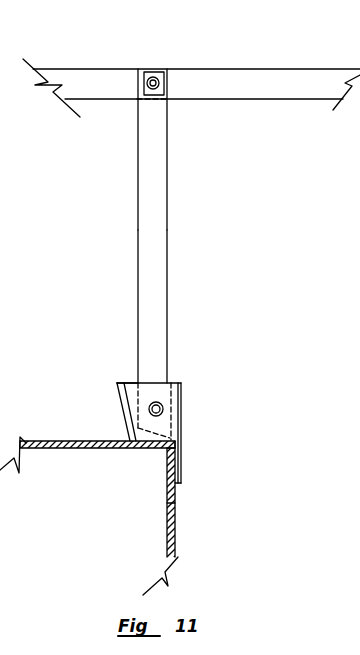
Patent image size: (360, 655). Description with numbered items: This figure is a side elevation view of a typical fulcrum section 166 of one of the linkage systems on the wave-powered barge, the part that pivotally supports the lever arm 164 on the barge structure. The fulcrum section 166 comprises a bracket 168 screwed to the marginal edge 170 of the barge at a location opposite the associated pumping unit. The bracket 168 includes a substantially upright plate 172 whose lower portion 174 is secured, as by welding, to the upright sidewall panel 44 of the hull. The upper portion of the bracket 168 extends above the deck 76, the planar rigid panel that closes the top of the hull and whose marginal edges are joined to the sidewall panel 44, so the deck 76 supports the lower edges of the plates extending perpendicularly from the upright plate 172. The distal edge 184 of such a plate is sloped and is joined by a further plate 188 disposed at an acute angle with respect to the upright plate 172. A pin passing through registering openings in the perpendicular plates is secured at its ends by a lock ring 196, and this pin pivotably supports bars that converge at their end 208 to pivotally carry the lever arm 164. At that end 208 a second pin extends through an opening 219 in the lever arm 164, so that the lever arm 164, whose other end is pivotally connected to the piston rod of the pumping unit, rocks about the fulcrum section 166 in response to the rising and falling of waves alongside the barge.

The sidewall panel 44 is at (167, 492).
The deck 76 is at (105, 438).
The lever arm 164 is at (230, 85).
The fulcrum section 166 is at (168, 225).
The bracket 168 is at (180, 397).
The marginal edge 170 is at (174, 508).
The upright plate 172 is at (176, 448).
The lower portion 174 is at (178, 470).
The distal edge 184 is at (128, 382).
The further plate 188 is at (115, 397).
The lock ring 196 is at (158, 401).
The end of bar 208 is at (155, 132).
The opening 219 is at (157, 70).